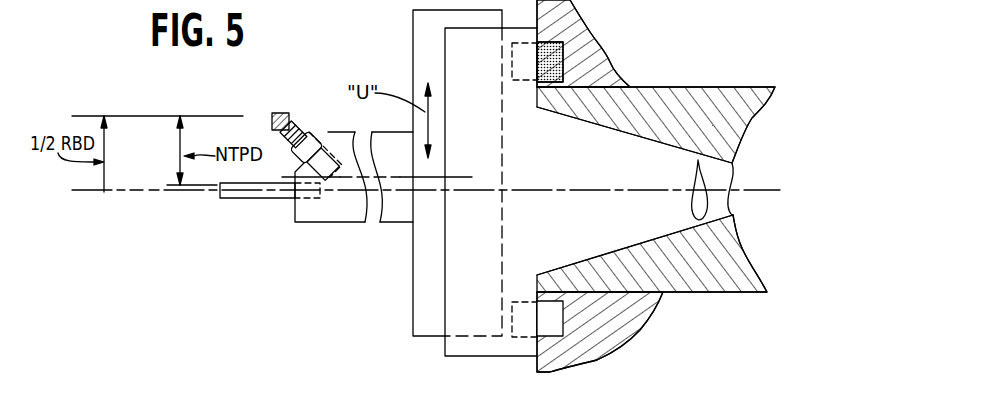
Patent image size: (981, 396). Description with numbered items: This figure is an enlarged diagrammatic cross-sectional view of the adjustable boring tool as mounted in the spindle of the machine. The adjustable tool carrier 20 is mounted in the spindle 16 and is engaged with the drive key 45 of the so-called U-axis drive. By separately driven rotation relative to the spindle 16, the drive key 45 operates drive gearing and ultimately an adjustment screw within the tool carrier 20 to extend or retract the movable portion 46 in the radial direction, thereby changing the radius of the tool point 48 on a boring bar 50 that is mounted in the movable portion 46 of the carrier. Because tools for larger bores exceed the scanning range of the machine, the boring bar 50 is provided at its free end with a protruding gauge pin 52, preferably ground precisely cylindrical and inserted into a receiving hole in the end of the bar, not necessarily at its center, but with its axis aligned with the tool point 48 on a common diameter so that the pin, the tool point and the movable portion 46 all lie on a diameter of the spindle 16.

The spindle 16 is at (705, 97).
The adjustable tool carrier 20 is at (413, 267).
The drive key 45 is at (593, 32).
The movable portion 46 is at (418, 40).
The tool point 48 is at (283, 113).
The boring bar 50 is at (340, 222).
The gauge pin 52 is at (250, 198).